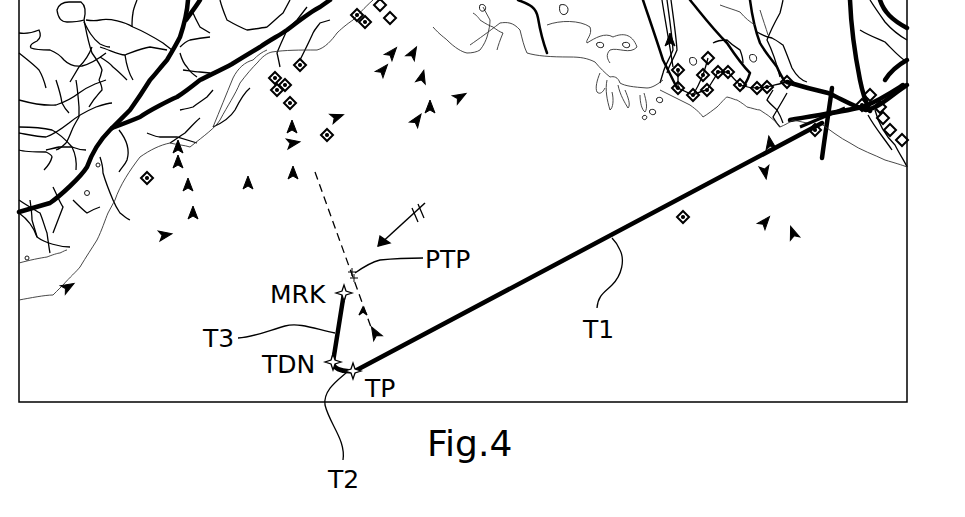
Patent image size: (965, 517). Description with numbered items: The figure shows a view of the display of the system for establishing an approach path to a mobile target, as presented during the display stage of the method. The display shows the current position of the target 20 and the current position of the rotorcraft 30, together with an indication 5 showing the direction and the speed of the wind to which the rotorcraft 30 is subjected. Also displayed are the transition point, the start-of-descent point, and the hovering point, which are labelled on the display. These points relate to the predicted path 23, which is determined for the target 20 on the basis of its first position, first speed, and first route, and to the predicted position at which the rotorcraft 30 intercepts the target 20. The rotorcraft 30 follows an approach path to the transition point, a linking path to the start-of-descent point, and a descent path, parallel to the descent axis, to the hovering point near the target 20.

The indication 5 is at (425, 208).
The target 20 is at (383, 337).
The predicted path 23 is at (322, 202).
The rotorcraft 30 is at (822, 125).